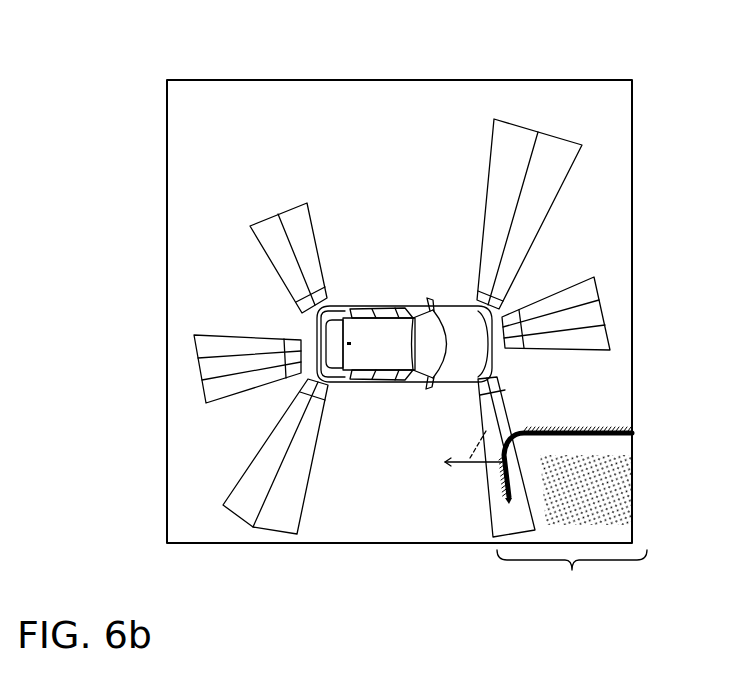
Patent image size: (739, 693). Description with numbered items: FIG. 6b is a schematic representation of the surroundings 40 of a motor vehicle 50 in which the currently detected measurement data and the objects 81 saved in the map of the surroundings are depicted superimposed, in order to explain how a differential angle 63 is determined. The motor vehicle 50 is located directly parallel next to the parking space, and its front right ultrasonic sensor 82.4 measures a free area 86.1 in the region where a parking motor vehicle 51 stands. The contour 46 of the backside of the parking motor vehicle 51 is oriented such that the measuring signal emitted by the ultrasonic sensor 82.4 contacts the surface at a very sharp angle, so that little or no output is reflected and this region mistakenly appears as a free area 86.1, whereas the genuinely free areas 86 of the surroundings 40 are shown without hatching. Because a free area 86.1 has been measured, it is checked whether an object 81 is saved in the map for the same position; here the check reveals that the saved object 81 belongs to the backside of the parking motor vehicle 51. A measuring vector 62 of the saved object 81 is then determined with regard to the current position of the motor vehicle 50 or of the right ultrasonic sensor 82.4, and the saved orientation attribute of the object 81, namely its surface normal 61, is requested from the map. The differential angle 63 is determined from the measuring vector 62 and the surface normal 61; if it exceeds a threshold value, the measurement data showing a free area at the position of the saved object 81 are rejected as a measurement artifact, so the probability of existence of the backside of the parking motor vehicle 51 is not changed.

The surroundings 40 is at (160, 72).
The motor vehicle 50 is at (380, 341).
The front right ultrasonic sensor 82.4 is at (490, 367).
The measuring vector 62 is at (495, 410).
The differential angle 63 is at (475, 445).
The surface normal 61 is at (463, 462).
The object 81 is at (520, 447).
The contour 46 is at (509, 497).
The free area 86 is at (383, 452).
The free area 86.1 is at (490, 513).
The parking motor vehicle 51 is at (572, 532).